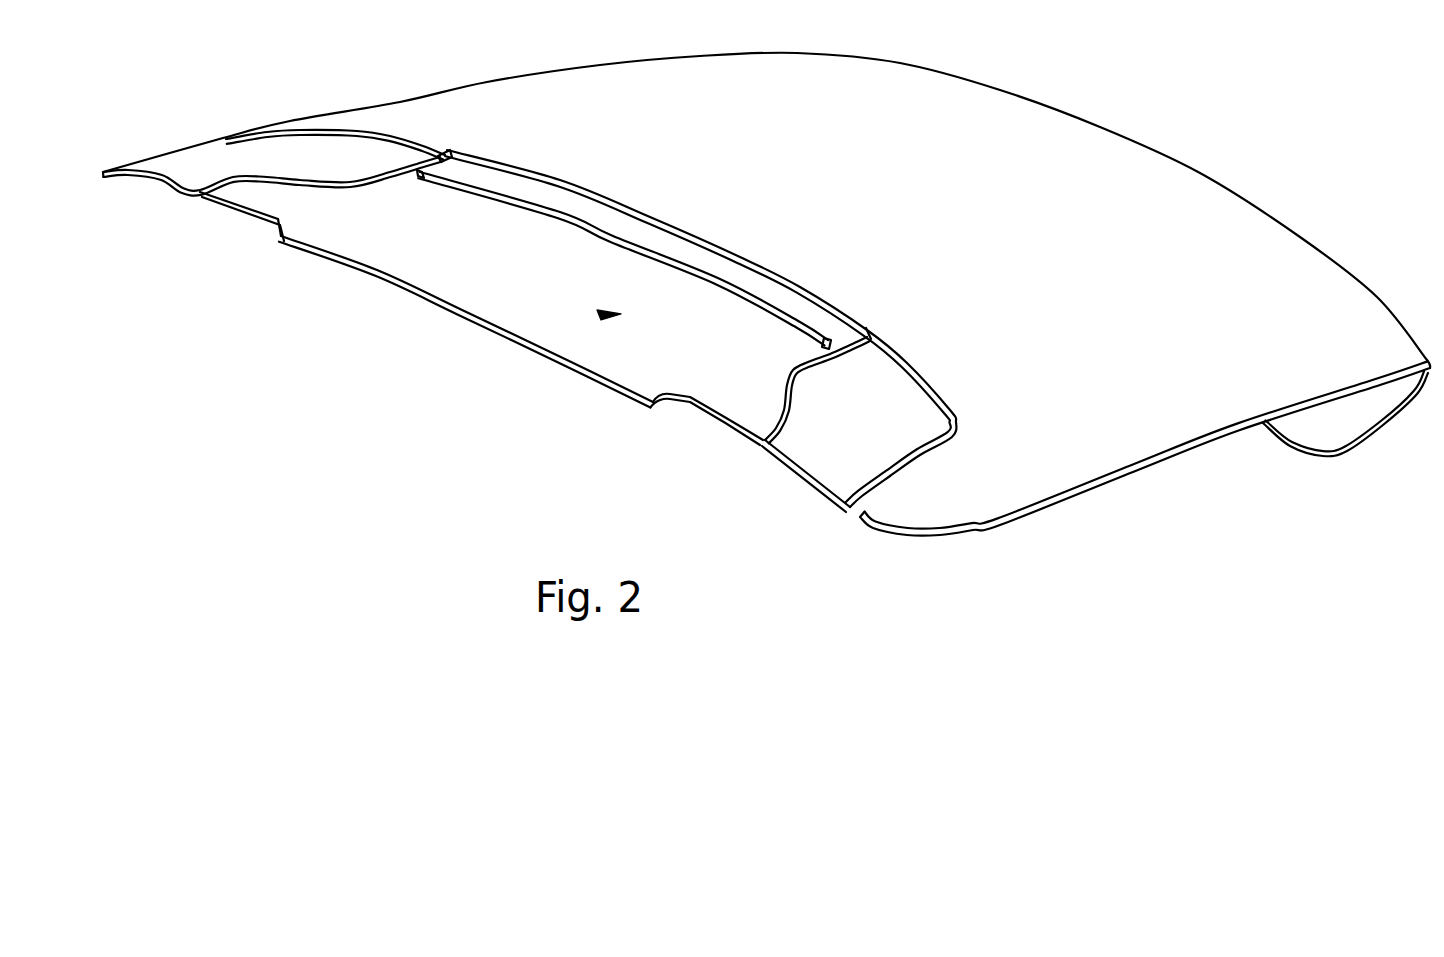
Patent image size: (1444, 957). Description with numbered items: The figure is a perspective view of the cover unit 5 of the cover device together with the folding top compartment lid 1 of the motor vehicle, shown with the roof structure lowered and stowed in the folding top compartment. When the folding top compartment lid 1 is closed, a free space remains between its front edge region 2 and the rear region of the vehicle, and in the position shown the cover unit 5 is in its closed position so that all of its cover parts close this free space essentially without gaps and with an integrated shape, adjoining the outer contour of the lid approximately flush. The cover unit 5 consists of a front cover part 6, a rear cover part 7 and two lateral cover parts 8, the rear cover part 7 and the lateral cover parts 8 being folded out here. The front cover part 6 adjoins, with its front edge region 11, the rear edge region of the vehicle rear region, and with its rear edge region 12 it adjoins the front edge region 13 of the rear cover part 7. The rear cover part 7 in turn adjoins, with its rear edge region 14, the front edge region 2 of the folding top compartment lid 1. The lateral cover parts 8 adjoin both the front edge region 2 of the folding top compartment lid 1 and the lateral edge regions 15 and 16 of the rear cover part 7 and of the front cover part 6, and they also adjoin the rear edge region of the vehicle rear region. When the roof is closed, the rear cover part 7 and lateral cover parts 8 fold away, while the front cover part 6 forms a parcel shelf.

The folding top compartment lid 1 is at (1020, 130).
The front edge region 2 is at (530, 278).
The cover unit 5 is at (601, 318).
The front cover part 6 is at (472, 287).
The rear cover part 7 is at (700, 303).
The lateral cover parts 8 is at (227, 153).
The front edge region 11 is at (482, 325).
The rear edge region 12 is at (700, 266).
The front edge region 13 is at (623, 259).
The rear edge region 14 is at (769, 265).
The lateral edge region 15 is at (447, 150).
The lateral edge region 16 is at (320, 178).